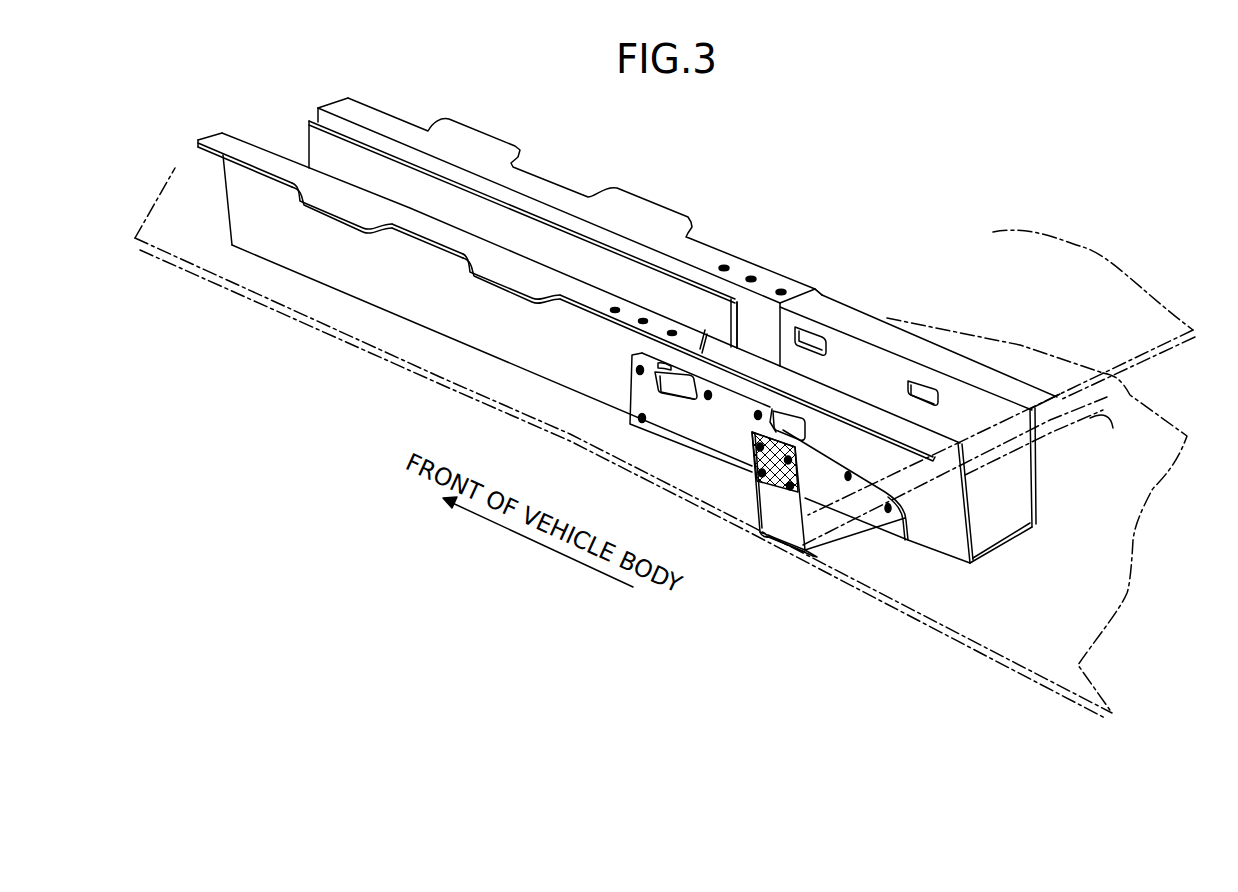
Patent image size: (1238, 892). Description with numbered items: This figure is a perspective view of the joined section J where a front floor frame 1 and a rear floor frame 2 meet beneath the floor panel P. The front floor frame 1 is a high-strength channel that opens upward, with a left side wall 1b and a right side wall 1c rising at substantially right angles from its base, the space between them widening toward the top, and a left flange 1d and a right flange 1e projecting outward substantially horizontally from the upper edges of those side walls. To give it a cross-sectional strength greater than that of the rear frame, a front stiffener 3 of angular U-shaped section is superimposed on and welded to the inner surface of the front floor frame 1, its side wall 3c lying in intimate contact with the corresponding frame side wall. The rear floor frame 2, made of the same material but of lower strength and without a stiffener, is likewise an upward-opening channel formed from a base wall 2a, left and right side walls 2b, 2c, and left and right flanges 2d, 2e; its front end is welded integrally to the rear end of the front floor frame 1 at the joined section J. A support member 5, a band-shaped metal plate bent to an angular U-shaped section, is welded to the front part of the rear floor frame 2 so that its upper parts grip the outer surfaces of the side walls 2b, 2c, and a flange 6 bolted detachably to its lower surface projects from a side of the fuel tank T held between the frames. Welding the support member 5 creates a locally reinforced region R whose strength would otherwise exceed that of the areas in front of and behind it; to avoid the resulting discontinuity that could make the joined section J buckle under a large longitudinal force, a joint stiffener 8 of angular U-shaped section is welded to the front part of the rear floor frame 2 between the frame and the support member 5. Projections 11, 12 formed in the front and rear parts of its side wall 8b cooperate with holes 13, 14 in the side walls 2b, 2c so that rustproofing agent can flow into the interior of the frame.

The front floor frame 1 is at (456, 314).
The left side wall 1b is at (503, 347).
The right side wall 1c is at (757, 332).
The left flange 1d is at (440, 236).
The right flange 1e is at (535, 187).
The rear floor frame 2 is at (871, 319).
The base wall 2a is at (1005, 543).
The left side wall 2b is at (941, 540).
The right side wall 2c is at (1035, 466).
The left flange 2d is at (912, 440).
The right flange 2e is at (988, 377).
The front stiffener 3 is at (429, 194).
The side wall of front stiffener 3c is at (617, 263).
The support member 5 is at (858, 528).
The flange 6 is at (835, 547).
The joint stiffener 8 is at (680, 433).
The left side wall of joint stiffener 8b is at (723, 443).
The projection 11 is at (678, 388).
The projection 12 is at (793, 445).
The hole 13 is at (670, 365).
The hole 14 is at (778, 410).
The joined section J is at (824, 293).
The floor panel P is at (1090, 267).
The reinforced region R is at (750, 462).
The fuel tank T is at (978, 633).